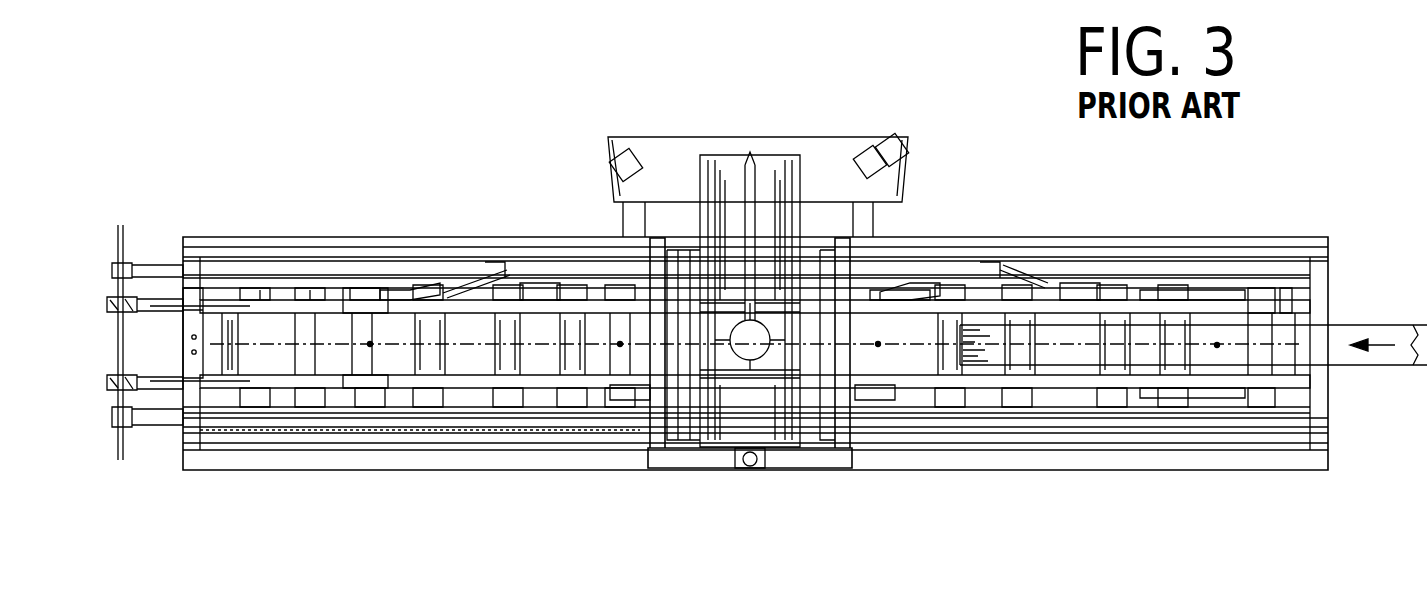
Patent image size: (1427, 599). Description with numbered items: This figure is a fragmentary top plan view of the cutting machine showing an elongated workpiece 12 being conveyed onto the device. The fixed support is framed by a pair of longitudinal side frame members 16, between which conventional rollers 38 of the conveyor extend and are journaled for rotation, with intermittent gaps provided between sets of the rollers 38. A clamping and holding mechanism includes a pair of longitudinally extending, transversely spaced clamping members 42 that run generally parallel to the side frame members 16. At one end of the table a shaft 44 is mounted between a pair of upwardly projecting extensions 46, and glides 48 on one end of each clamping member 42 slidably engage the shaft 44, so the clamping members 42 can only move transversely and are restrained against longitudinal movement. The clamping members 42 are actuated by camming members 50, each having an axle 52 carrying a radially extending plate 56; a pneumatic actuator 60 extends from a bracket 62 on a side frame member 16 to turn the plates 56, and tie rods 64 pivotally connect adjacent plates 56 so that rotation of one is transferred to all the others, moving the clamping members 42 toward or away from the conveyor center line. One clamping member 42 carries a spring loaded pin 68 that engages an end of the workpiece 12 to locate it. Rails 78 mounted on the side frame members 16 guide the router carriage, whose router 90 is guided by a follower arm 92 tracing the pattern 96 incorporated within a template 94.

The workpiece 12 is at (1340, 340).
The side frame members 16 is at (366, 240).
The rollers 38 is at (307, 288).
The clamping members 42 is at (285, 378).
The shaft 44 is at (116, 288).
The extensions 46 is at (119, 278).
The glides 48 is at (115, 380).
The camming members 50 is at (368, 405).
The axle 52 is at (371, 340).
The plate 56 is at (358, 372).
The pneumatic actuator 60 is at (463, 283).
The bracket 62 is at (494, 265).
The tie rods 64 is at (532, 300).
The spring loaded pin 68 is at (183, 370).
The rails 78 is at (322, 250).
The router 90 is at (752, 346).
The follower arm 92 is at (760, 185).
The template 94 is at (655, 158).
The pattern 96 is at (884, 150).